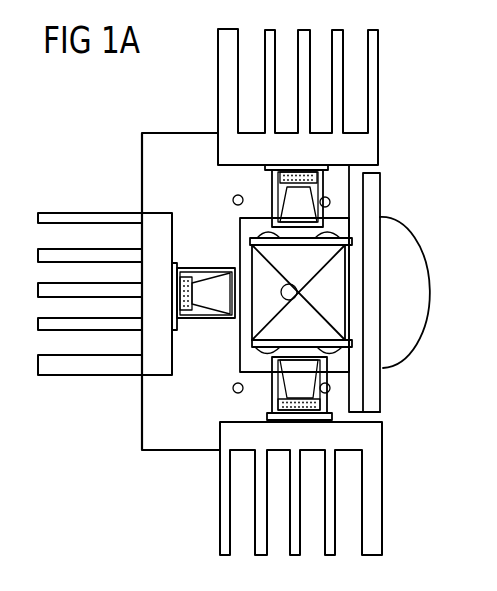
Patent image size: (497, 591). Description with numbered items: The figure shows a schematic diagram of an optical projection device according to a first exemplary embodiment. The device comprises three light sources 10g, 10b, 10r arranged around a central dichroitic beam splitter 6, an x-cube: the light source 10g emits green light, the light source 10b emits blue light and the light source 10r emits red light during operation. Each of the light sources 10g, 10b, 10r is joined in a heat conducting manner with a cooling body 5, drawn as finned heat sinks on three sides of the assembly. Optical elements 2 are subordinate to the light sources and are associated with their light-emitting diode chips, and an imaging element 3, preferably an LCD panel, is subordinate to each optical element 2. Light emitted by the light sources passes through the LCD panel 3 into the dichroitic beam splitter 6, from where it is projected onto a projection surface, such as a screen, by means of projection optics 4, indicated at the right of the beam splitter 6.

The optical element 2 is at (333, 192).
The imaging element 3 is at (247, 248).
The projection optics 4 is at (430, 250).
The cooling body 5 is at (375, 102).
The dichroitic beam splitter 6 is at (340, 298).
The light source 10b is at (350, 183).
The light source 10g is at (183, 265).
The light source 10r is at (330, 406).